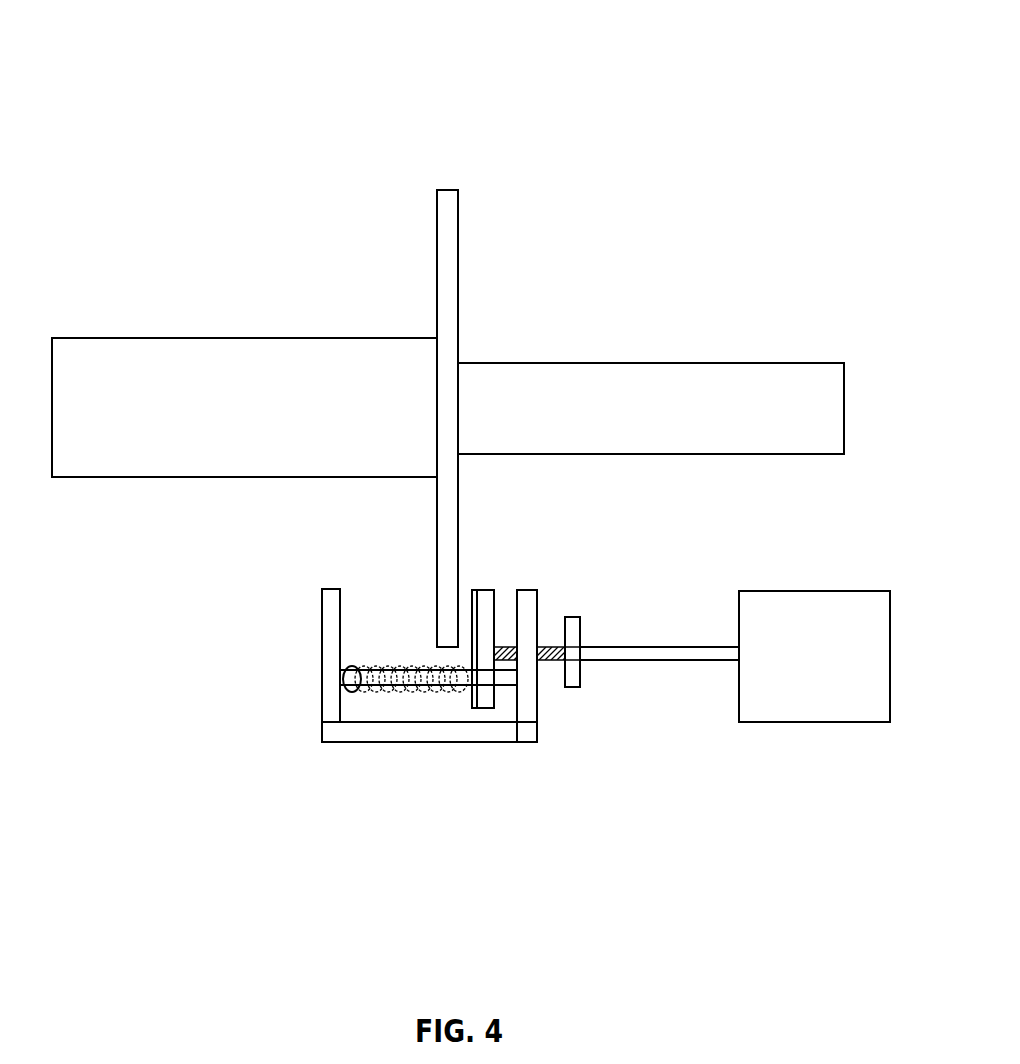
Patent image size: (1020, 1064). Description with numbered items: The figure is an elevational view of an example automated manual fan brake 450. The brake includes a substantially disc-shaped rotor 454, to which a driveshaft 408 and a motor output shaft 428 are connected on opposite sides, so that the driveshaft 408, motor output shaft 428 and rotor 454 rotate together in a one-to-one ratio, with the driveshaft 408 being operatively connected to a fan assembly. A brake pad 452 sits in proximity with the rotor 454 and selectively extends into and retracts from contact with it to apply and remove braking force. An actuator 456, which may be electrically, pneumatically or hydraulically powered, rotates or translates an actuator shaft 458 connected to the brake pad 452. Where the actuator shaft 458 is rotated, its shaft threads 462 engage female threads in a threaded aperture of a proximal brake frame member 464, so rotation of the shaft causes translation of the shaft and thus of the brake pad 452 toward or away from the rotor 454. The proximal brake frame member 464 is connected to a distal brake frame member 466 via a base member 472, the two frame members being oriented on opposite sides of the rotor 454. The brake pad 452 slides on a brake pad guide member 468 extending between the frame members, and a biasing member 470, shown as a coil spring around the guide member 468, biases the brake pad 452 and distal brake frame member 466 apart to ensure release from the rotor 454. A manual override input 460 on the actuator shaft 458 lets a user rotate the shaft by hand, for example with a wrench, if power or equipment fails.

The automated manual fan brake 450 is at (212, 86).
The driveshaft 408 is at (225, 372).
The motor output shaft 428 is at (679, 392).
The rotor 454 is at (458, 280).
The brake pad 452 is at (482, 598).
The proximal brake frame member 464 is at (527, 677).
The distal brake frame member 466 is at (332, 605).
The base member 472 is at (425, 733).
The biasing member 470 is at (402, 668).
The brake pad guide member 468 is at (352, 676).
The shaft threads 462 is at (545, 662).
The manual override input 460 is at (572, 617).
The actuator shaft 458 is at (680, 647).
The actuator 456 is at (848, 607).